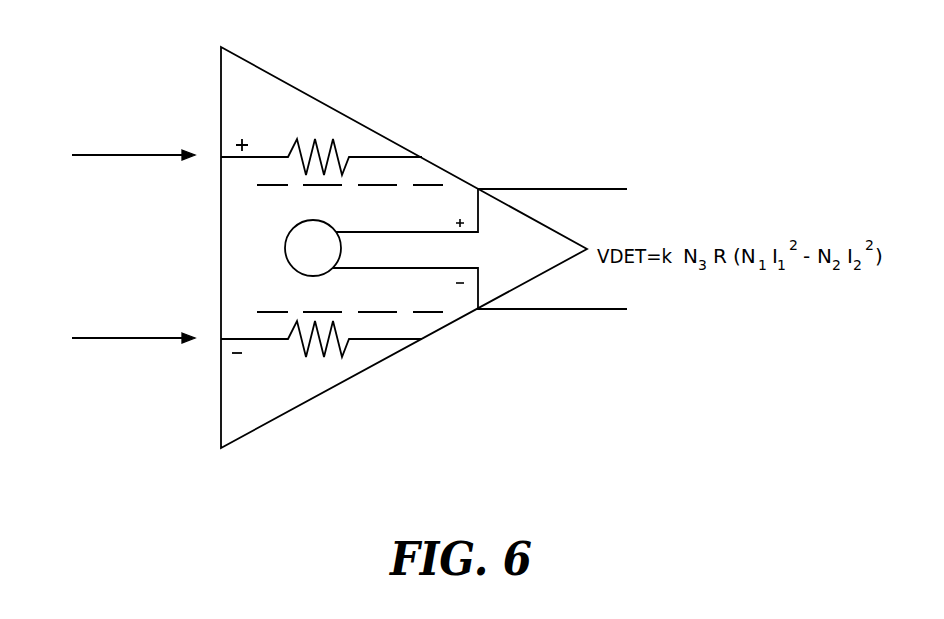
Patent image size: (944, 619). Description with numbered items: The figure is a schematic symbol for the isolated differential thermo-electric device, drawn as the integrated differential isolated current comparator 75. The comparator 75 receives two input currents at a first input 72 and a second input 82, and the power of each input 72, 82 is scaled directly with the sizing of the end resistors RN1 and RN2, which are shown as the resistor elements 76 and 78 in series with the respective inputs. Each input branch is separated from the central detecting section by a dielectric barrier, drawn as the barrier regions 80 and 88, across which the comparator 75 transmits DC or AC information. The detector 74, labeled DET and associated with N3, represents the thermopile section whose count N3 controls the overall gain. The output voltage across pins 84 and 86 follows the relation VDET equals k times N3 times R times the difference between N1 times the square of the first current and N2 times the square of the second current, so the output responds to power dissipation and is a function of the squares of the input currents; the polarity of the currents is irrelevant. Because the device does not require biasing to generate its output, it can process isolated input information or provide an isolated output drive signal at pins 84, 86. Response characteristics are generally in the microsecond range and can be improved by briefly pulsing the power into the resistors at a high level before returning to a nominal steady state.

The input 72 is at (115, 154).
The detector 74 is at (285, 245).
The comparator 75 is at (399, 107).
The first resistor RN1 76 is at (333, 140).
The second resistor RN2 78 is at (342, 348).
The first dielectric barrier 80 is at (422, 157).
The input 82 is at (113, 336).
The pin 84 is at (500, 209).
The pin 86 is at (499, 302).
The second dielectric barrier 88 is at (422, 340).